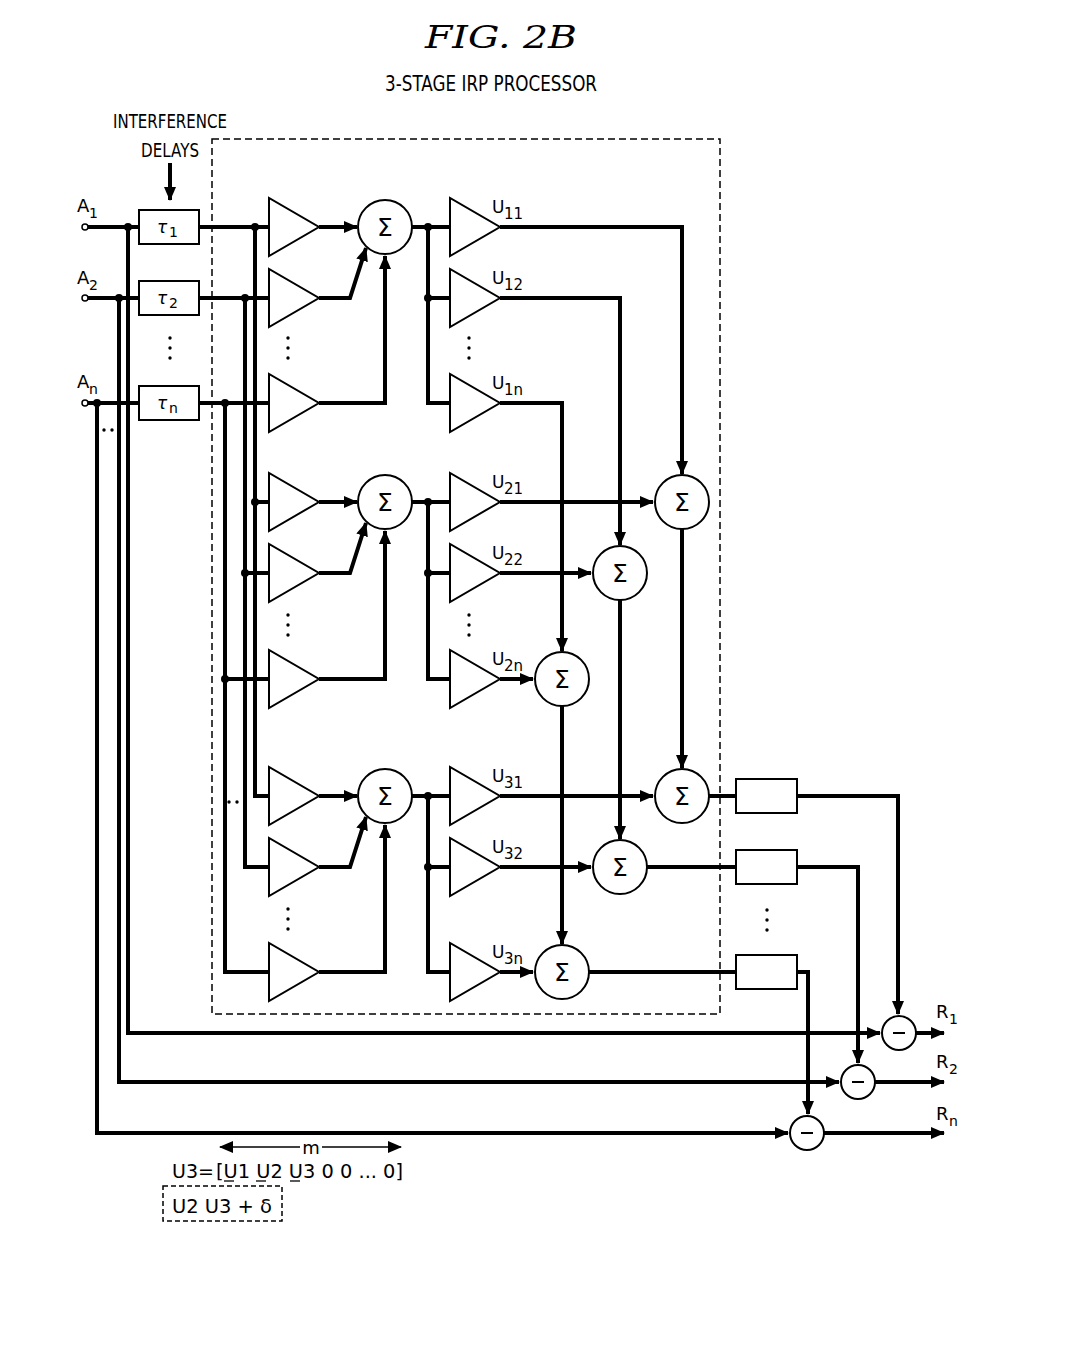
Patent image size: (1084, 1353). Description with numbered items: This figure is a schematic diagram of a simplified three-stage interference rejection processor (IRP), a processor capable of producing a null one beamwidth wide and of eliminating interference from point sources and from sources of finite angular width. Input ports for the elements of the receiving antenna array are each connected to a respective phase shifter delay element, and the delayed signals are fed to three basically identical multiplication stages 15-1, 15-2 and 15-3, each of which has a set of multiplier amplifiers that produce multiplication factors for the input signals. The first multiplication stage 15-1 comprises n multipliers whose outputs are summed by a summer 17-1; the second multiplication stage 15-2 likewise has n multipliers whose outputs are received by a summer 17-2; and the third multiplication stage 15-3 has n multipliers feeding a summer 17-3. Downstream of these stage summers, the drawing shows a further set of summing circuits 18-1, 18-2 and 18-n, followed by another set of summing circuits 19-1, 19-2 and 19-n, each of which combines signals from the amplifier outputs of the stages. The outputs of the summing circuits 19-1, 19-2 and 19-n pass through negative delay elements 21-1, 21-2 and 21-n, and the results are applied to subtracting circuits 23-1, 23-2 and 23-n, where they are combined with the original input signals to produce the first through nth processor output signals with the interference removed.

The multiplication stage 15-1 is at (369, 167).
The multiplication stage 15-2 is at (369, 444).
The multiplication stage 15-3 is at (369, 743).
The summer 17-1 is at (393, 202).
The summer 17-2 is at (393, 477).
The summer 17-3 is at (393, 772).
The summer 18-1 is at (663, 480).
The summer 18-2 is at (601, 554).
The summer 18-n is at (543, 700).
The summer 19-1 is at (663, 775).
The summer 19-2 is at (601, 848).
The summer 19-n is at (581, 954).
The negative delay element 21-1 is at (762, 780).
The negative delay element 21-2 is at (790, 851).
The negative delay element 21-n is at (782, 956).
The subtractor 23-1 is at (908, 1012).
The subtractor 23-2 is at (864, 1098).
The subtractor 23-n is at (803, 1150).